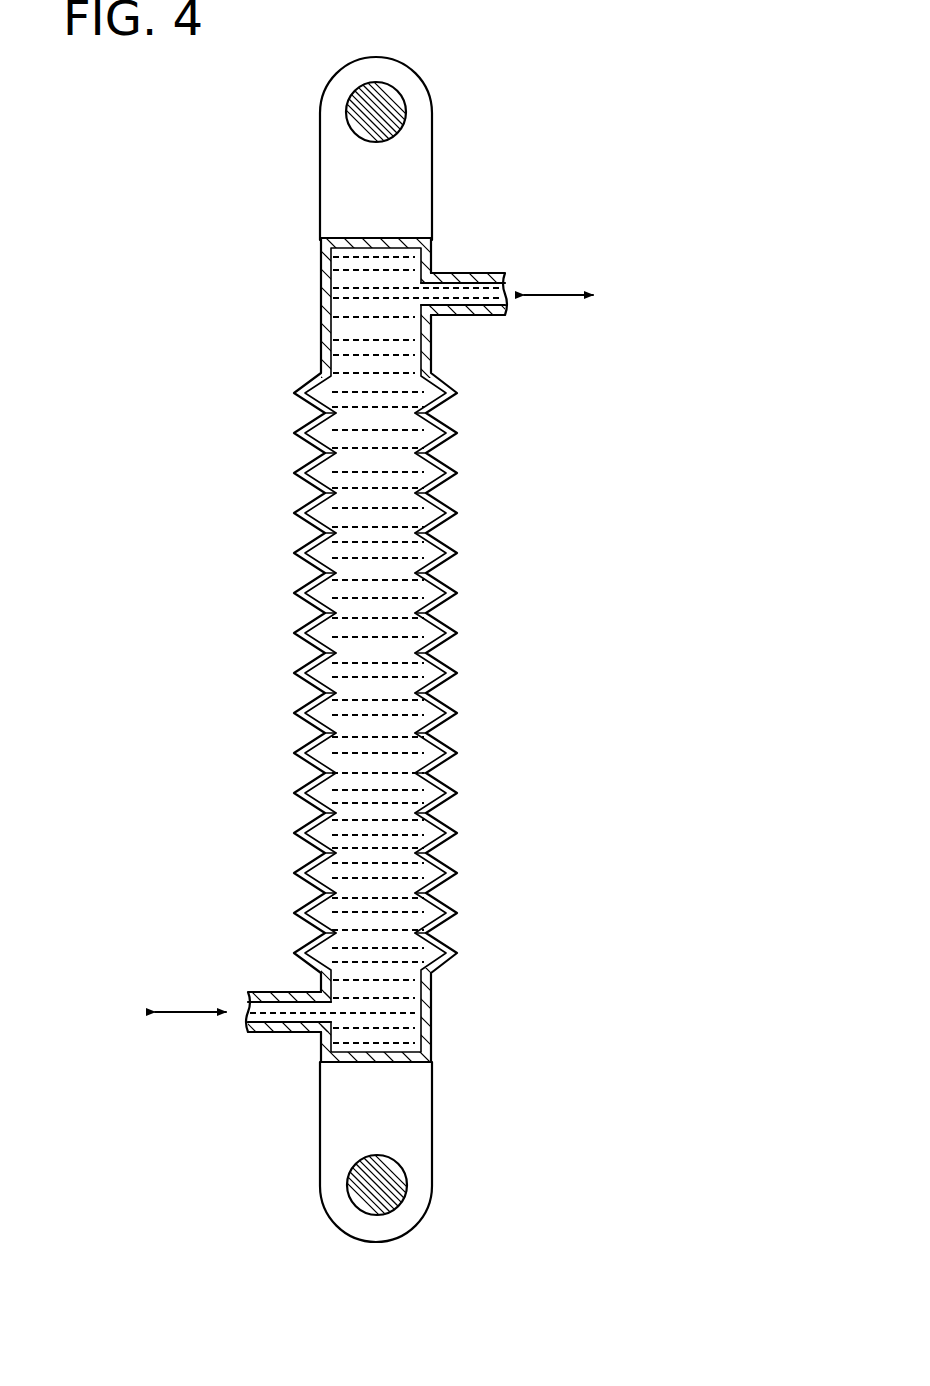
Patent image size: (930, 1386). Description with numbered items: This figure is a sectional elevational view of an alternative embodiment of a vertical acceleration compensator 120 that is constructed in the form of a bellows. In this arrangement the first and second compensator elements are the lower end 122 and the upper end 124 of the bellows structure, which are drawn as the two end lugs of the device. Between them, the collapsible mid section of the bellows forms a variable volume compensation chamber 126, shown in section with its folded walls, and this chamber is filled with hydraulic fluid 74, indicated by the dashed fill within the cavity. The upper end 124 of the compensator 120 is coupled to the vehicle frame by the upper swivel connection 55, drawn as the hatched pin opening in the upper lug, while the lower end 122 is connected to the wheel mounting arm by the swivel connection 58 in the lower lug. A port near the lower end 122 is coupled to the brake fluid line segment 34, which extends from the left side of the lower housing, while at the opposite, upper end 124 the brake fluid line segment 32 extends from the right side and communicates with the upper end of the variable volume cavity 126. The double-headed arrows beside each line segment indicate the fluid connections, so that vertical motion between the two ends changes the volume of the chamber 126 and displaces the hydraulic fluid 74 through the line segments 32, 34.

The vertical acceleration compensator 120 is at (575, 140).
The upper end 124 is at (330, 170).
The lower end 122 is at (407, 1122).
The upper swivel connection 55 is at (400, 85).
The swivel connection 58 is at (385, 1213).
The brake fluid line segment 32 is at (477, 317).
The brake fluid line segment 34 is at (273, 990).
The variable volume compensation chamber 126 is at (425, 708).
The hydraulic fluid 74 is at (383, 835).